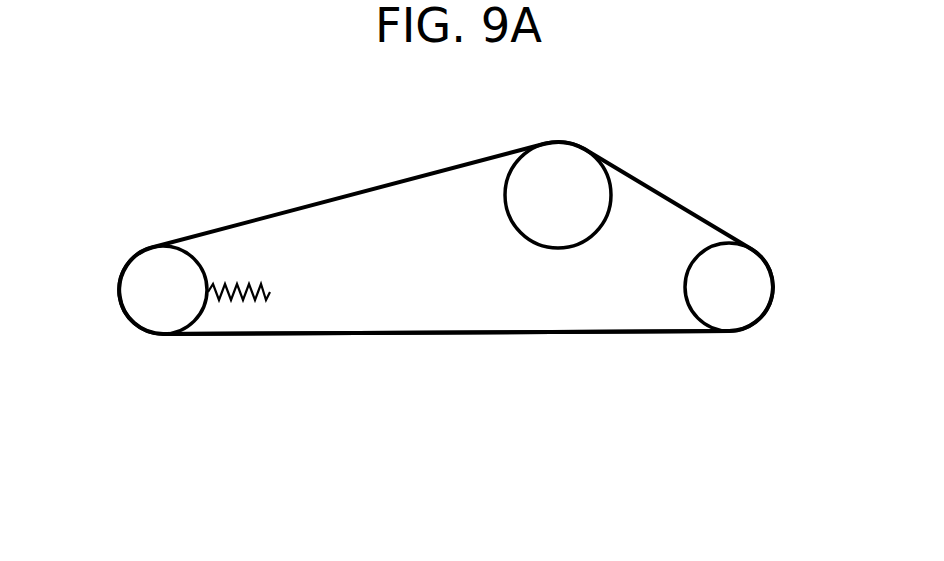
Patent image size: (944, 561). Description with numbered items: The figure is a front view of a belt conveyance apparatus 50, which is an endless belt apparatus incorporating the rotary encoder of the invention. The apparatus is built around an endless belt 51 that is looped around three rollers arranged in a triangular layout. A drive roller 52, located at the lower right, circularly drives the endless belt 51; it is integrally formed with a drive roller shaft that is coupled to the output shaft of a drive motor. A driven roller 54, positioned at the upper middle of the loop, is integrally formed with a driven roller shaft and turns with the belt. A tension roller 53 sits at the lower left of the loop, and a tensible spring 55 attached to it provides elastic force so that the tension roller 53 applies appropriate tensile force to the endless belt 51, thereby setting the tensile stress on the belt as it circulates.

The belt conveyance apparatus 50 is at (340, 142).
The endless belt 51 is at (488, 331).
The drive roller 52 is at (688, 285).
The tension roller 53 is at (205, 277).
The driven roller 54 is at (512, 212).
The tensible spring 55 is at (270, 292).